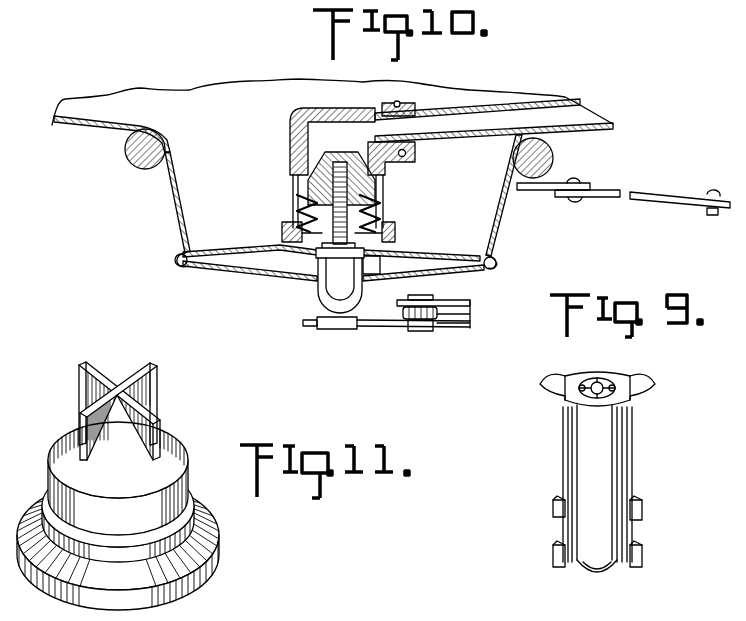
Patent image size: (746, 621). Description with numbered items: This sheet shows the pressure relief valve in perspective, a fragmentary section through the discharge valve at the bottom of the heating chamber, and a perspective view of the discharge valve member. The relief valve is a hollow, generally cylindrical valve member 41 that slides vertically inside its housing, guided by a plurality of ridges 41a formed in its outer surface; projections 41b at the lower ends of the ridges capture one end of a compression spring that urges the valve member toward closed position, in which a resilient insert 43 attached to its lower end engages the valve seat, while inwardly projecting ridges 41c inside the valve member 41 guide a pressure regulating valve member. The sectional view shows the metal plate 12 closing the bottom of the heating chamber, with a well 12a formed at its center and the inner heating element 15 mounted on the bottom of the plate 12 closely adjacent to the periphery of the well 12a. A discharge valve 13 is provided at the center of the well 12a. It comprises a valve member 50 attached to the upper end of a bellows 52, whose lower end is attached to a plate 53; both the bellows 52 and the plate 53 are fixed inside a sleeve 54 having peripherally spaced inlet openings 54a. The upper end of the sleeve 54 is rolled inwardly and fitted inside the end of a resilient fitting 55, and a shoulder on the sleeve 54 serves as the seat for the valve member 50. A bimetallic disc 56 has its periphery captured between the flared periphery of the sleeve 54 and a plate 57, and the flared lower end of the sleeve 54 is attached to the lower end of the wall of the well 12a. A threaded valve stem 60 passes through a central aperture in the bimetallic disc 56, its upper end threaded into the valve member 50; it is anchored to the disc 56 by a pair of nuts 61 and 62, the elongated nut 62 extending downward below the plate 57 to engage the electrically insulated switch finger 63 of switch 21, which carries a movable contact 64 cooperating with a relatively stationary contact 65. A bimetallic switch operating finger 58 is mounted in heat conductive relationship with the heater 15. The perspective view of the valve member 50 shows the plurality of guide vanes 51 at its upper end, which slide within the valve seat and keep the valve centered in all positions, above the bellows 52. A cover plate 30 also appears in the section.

In FIG. 10, the metal plate 12 is at (70, 128).
In FIG. 10, the well 12a is at (178, 210).
In FIG. 10, the discharge valve 13 is at (290, 100).
In FIG. 10, the inner heating element 15 is at (130, 160).
In FIG. 10, the switch 21 is at (449, 338).
In FIG. 10, the cover plate 30 is at (503, 110).
In FIG. 9, the valve member 41 is at (607, 437).
In FIG. 9, the ridges 41a is at (557, 384).
In FIG. 9, the projections 41b is at (557, 555).
In FIG. 9, the inwardly projecting ridges 41c is at (600, 380).
In FIG. 9, the resilient insert 43 is at (620, 570).
In FIG. 10, the valve member 50 is at (308, 183).
In FIG. 11, the valve member 50 is at (173, 440).
In FIG. 11, the guide vanes 51 is at (95, 423).
In FIG. 10, the bellows 52 is at (382, 218).
In FIG. 11, the bellows 52 is at (203, 525).
In FIG. 10, the plate 53 is at (395, 242).
In FIG. 10, the sleeve 54 is at (385, 174).
In FIG. 10, the inlet openings 54a is at (384, 186).
In FIG. 10, the resilient fitting 55 is at (290, 130).
In FIG. 10, the bimetallic disc 56 is at (290, 258).
In FIG. 10, the plate 57 is at (224, 268).
In FIG. 10, the bimetallic switch operating finger 58 is at (643, 200).
In FIG. 10, the threaded valve stem 60 is at (298, 207).
In FIG. 10, the nut 61 is at (371, 262).
In FIG. 10, the nut 62 is at (337, 285).
In FIG. 10, the switch finger 63 is at (378, 329).
In FIG. 10, the movable contact 64 is at (409, 325).
In FIG. 10, the stationary contact 65 is at (427, 297).